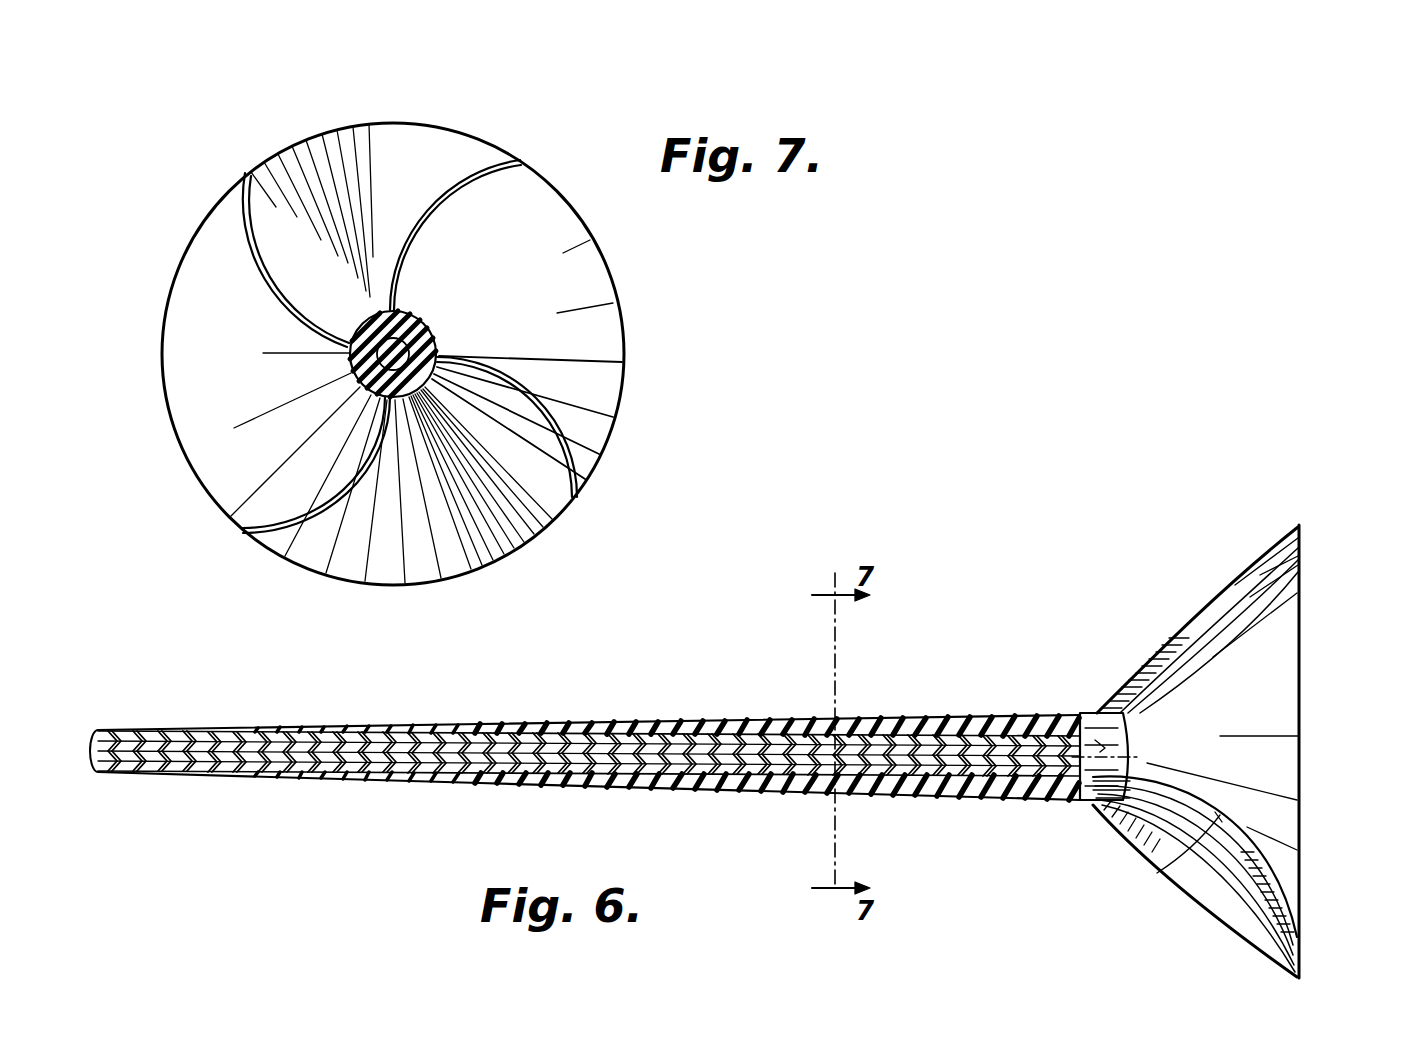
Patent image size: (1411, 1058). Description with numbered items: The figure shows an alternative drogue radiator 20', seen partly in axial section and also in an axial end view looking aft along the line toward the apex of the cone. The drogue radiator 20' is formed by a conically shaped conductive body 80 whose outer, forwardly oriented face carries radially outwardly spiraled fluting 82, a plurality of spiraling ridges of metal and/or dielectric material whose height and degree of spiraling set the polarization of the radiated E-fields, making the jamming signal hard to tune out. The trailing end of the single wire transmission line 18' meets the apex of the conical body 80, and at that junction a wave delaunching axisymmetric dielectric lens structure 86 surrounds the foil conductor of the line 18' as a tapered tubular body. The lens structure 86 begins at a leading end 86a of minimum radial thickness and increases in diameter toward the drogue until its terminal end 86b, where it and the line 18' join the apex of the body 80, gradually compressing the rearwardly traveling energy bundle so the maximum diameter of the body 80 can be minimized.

In FIG. 7, the single wire transmission line 18' is at (479, 354).
In FIG. 6, the single wire transmission line 18' is at (586, 771).
In FIG. 7, the drogue radiator 20' is at (442, 354).
In FIG. 6, the drogue radiator 20' is at (1234, 734).
In FIG. 6, the conically shaped conductive body 80 is at (1300, 720).
In FIG. 7, the fluting 82 is at (253, 240).
In FIG. 6, the fluting 82 is at (1183, 623).
In FIG. 6, the dielectric lens structure 86 is at (735, 717).
In FIG. 6, the leading end 86a is at (350, 730).
In FIG. 6, the terminal end 86b is at (1090, 713).